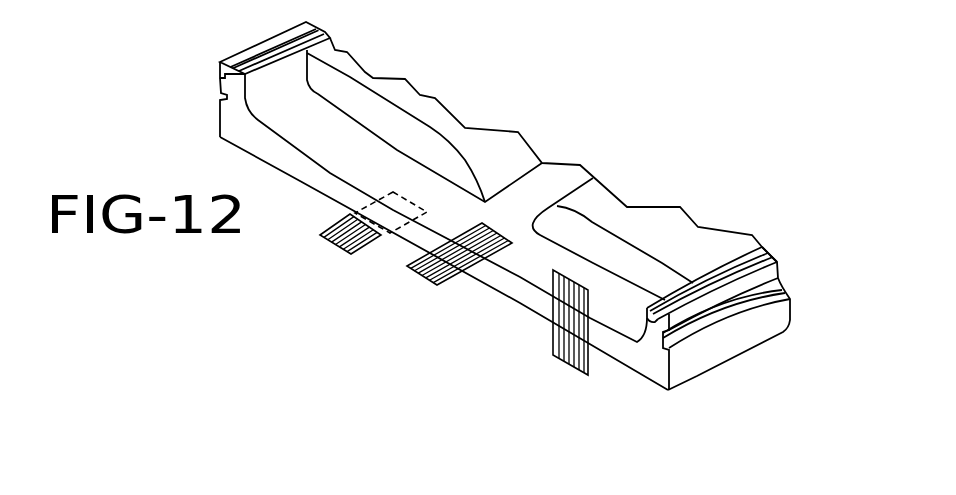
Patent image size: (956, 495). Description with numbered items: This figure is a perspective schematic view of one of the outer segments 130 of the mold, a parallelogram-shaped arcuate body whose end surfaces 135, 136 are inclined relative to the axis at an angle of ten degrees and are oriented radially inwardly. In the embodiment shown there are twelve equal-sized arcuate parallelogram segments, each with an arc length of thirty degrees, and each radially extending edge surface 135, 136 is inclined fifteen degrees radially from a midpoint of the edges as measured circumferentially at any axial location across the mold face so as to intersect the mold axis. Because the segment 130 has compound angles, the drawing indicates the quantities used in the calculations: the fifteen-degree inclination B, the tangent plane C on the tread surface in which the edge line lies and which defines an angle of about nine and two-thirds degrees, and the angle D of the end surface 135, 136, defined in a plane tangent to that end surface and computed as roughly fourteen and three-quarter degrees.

The outer segment 130 is at (518, 247).
The end surface 135 is at (457, 273).
The end surface 136 is at (642, 365).
The angle B is at (340, 237).
The tangent plane C is at (423, 275).
The angle D is at (567, 363).